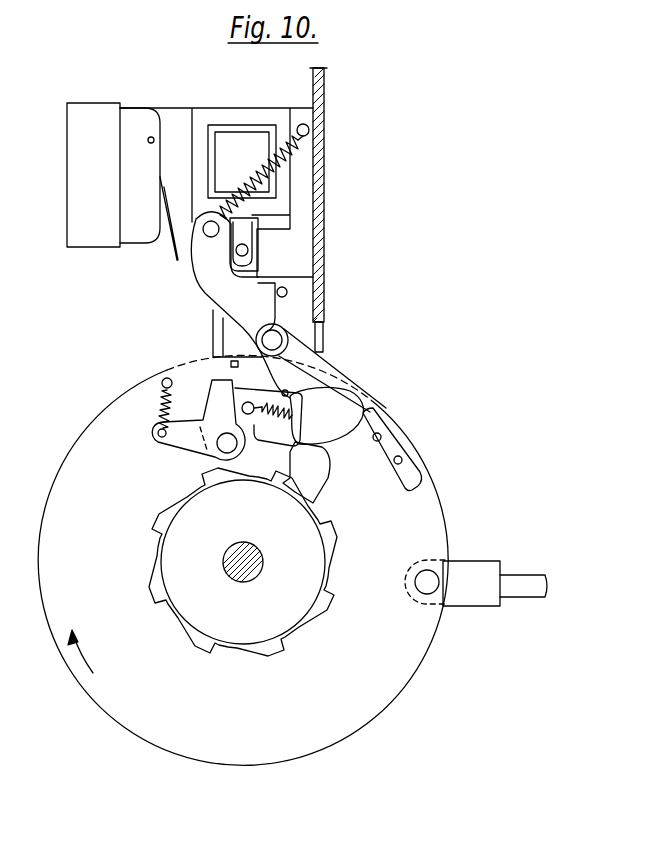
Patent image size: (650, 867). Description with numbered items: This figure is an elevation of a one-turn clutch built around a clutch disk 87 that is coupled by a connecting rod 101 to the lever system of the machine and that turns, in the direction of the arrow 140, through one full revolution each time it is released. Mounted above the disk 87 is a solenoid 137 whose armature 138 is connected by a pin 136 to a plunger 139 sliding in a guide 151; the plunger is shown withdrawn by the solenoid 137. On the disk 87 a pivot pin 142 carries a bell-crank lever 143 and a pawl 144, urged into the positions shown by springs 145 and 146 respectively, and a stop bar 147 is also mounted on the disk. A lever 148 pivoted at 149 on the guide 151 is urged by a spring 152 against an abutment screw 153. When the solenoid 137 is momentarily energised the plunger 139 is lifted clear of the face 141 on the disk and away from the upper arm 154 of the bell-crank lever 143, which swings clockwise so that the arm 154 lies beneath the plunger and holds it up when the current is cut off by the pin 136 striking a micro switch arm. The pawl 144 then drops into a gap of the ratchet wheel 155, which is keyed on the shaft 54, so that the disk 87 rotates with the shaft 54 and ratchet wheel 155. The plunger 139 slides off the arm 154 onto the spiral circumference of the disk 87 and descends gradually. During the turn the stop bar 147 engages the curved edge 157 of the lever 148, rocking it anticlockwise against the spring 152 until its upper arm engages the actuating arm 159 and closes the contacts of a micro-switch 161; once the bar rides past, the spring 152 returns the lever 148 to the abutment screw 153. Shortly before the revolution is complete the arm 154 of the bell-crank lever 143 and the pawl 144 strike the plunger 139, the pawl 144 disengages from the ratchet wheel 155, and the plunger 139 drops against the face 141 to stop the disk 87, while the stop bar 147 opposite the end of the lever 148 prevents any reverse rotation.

The solenoid 137 is at (273, 115).
The spring 152 is at (295, 157).
The armature 138 is at (243, 229).
The pin 136 is at (258, 244).
The abutment screw 153 is at (284, 297).
The guide 151 is at (291, 305).
The pivot 149 is at (272, 340).
The lever 148 is at (312, 367).
The curved edge 157 is at (293, 397).
The spring 146 is at (303, 407).
The stop bar 147 is at (375, 428).
The pawl 144 is at (307, 483).
The plunger 139 is at (228, 333).
The face 141 is at (230, 364).
The spring 145 is at (157, 405).
The upper arm 154 is at (218, 385).
The bell-crank lever 143 is at (162, 442).
The pivot pin 142 is at (226, 445).
The shaft 54 is at (251, 576).
The ratchet wheel 155 is at (213, 640).
The arrow 140 is at (72, 663).
The clutch disk 87 is at (268, 766).
The connecting rod 101 is at (522, 575).
The micro-switch 161 is at (107, 229).
The actuating arm 159 is at (176, 258).